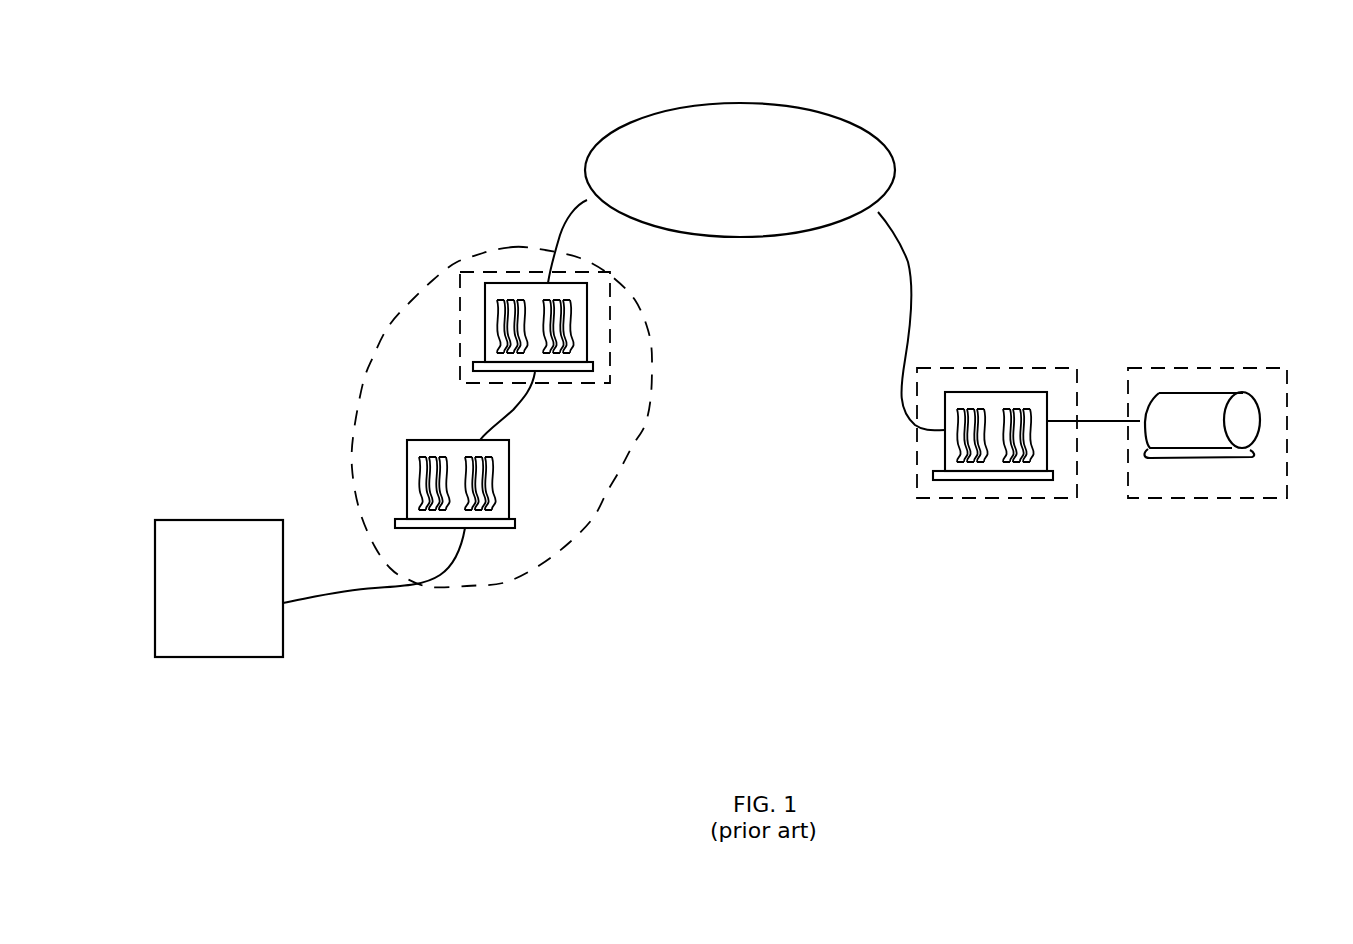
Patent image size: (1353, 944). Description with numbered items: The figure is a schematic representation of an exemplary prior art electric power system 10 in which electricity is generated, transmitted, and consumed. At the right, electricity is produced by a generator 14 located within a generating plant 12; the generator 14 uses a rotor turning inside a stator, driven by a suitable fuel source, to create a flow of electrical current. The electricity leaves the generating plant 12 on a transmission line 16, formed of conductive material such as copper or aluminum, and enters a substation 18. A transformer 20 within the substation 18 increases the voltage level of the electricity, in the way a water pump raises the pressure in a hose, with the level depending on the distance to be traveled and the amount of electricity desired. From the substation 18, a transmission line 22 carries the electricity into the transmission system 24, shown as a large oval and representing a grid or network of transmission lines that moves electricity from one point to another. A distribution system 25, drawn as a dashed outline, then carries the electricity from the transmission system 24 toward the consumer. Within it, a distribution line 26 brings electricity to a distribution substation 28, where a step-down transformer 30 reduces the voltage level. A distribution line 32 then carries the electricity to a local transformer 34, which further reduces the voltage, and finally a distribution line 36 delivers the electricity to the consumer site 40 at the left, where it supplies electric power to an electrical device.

The electric power system 10 is at (1128, 50).
The generating plant 12 is at (1210, 365).
The generator 14 is at (1260, 420).
The transmission line 16 is at (1090, 420).
The substation 18 is at (1030, 498).
The transformer 20 is at (987, 392).
The transmission line 22 is at (912, 262).
The transmission system 24 is at (880, 145).
The distribution system 25 is at (648, 395).
The distribution line 26 is at (562, 235).
The distribution substation 28 is at (610, 362).
The step-down transformer 30 is at (587, 325).
The distribution line 32 is at (522, 412).
The local transformer 34 is at (513, 492).
The distribution line 36 is at (378, 588).
The consumer site 40 is at (283, 657).